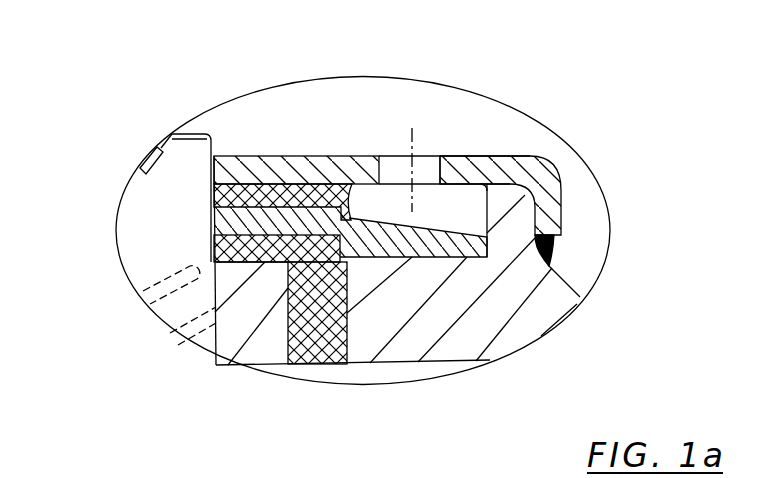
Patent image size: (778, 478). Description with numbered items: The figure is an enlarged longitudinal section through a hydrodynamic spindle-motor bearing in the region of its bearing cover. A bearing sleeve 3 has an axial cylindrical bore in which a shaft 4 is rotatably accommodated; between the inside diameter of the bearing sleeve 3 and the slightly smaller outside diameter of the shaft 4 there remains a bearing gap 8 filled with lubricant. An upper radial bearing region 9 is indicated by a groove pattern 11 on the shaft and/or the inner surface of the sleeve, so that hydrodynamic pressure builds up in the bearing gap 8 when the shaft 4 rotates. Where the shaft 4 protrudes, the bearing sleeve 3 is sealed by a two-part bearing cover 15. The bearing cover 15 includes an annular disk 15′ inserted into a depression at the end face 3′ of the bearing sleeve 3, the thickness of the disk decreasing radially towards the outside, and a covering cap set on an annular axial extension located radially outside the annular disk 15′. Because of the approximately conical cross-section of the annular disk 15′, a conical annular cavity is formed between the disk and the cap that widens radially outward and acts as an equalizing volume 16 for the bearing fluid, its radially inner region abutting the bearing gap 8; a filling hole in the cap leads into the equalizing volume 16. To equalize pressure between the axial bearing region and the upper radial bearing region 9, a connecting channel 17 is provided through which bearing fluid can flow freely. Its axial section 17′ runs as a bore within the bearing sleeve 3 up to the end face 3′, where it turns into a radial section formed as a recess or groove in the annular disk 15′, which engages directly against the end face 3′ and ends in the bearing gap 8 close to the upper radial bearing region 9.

The bearing sleeve 3 is at (540, 337).
The end face of the bearing sleeve 3′ is at (465, 334).
The shaft 4 is at (145, 195).
The bearing gap 8 is at (250, 322).
The upper radial bearing region 9 is at (151, 296).
The groove pattern 11 is at (122, 357).
The bearing cover 15 is at (301, 151).
The annular disk 15′ is at (260, 212).
The equalizing volume 16 is at (384, 193).
The connecting channel 17 is at (349, 329).
The axial section of the connecting channel 17′ is at (302, 365).